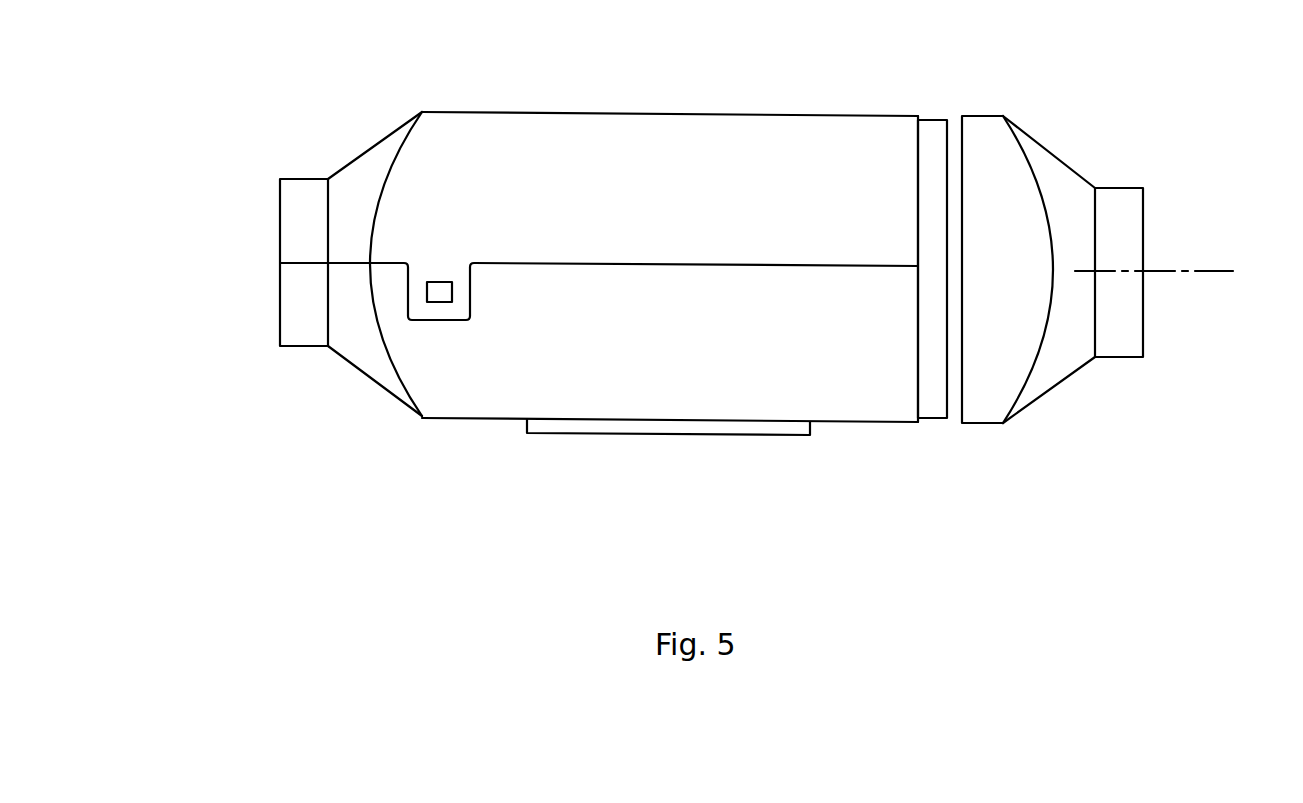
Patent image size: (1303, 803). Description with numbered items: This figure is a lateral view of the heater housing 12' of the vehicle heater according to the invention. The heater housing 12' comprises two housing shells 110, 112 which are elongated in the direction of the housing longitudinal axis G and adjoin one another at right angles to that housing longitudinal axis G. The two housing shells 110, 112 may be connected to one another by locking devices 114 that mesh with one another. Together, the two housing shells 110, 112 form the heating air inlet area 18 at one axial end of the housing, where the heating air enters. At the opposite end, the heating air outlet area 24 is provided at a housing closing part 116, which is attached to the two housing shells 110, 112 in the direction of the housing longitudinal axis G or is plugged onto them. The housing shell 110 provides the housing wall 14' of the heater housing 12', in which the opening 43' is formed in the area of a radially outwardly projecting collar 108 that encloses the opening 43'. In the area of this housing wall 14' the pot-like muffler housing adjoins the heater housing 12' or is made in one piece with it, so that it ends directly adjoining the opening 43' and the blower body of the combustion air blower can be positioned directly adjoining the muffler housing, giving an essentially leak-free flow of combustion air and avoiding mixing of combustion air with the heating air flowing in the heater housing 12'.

The heater housing 12' is at (994, 59).
The heating air inlet area 18 is at (230, 248).
The heating air outlet area 24 is at (1155, 208).
The housing shell 112 is at (623, 111).
The locking devices 114 is at (433, 299).
The housing closing part 116 is at (1050, 152).
The housing longitudinal axis g is at (1210, 273).
The housing shell 110 is at (482, 418).
The opening 43' is at (673, 478).
The collar 108 is at (793, 436).
The housing wall 14' is at (916, 304).